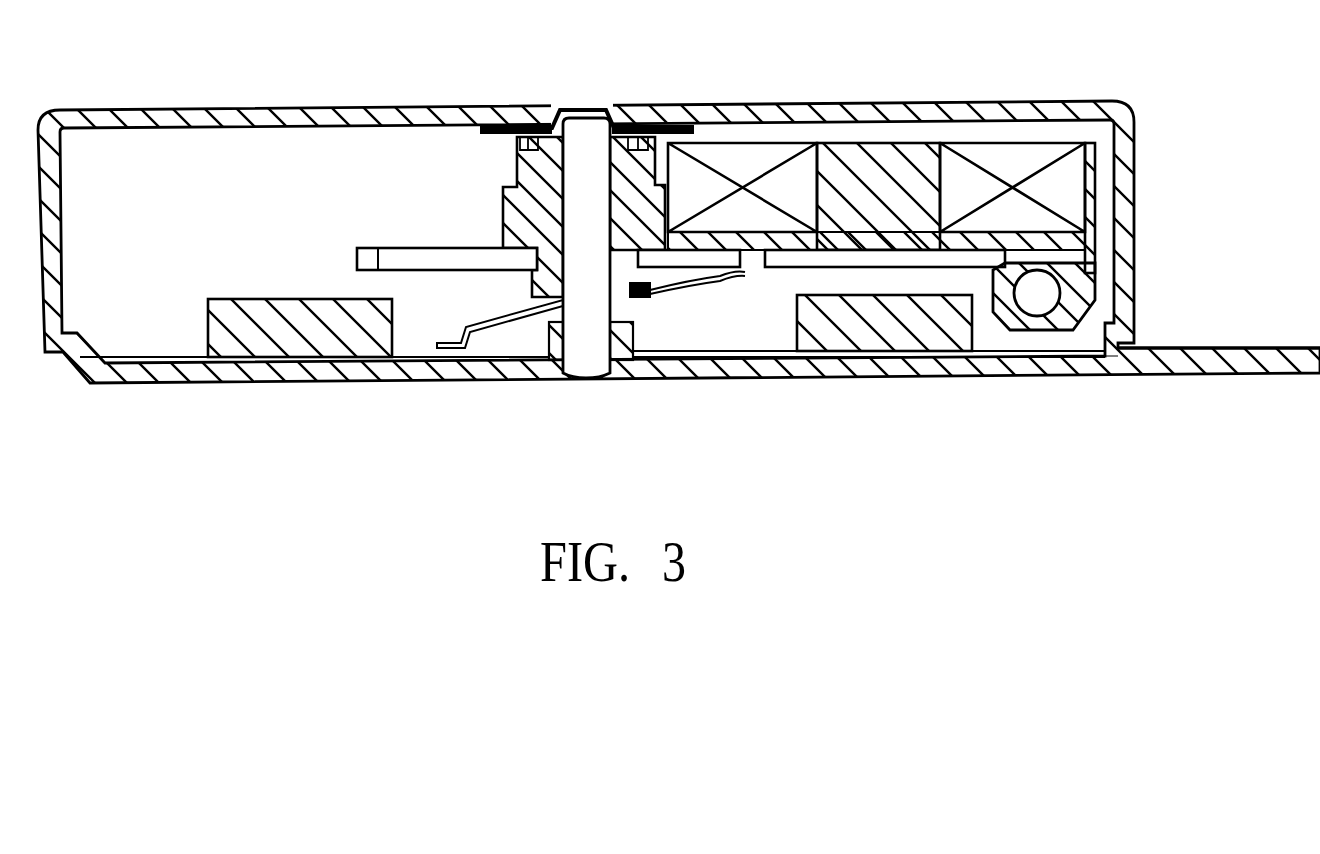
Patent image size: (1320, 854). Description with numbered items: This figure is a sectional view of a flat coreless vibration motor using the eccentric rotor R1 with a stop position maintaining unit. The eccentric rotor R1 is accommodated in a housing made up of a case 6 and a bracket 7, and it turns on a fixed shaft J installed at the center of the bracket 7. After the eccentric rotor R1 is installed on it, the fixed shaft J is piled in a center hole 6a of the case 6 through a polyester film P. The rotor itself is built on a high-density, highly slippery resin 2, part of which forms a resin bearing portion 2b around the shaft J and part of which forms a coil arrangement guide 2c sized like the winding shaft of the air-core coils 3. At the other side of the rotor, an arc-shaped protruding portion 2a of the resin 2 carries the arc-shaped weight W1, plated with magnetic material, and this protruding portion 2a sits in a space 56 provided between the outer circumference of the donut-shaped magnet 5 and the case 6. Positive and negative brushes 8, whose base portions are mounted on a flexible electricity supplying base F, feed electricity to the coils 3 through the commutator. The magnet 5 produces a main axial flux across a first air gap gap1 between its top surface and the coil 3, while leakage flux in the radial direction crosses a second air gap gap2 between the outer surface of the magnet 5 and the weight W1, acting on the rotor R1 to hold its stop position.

The highly slippery resin 2 is at (778, 268).
The arc-shaped protruding portion 2a is at (1077, 282).
The resin bearing portion 2b is at (540, 222).
The coil arrangement guide 2c is at (872, 180).
The air-core coil 3 is at (1047, 160).
The donut-shaped magnet 5 is at (288, 350).
The case 6 is at (1013, 108).
The center hole 6a is at (572, 104).
The bracket 7 is at (475, 380).
The brush 8 is at (687, 287).
The space 56 is at (1100, 322).
The flexible electricity supplying base F is at (1275, 345).
The fixed shaft J is at (580, 380).
The polyester film P is at (655, 104).
The eccentric rotor R1 is at (407, 198).
The arc-shaped weight W1 is at (1037, 307).
The first air gap gap1 is at (912, 283).
The second air gap gap2 is at (983, 310).